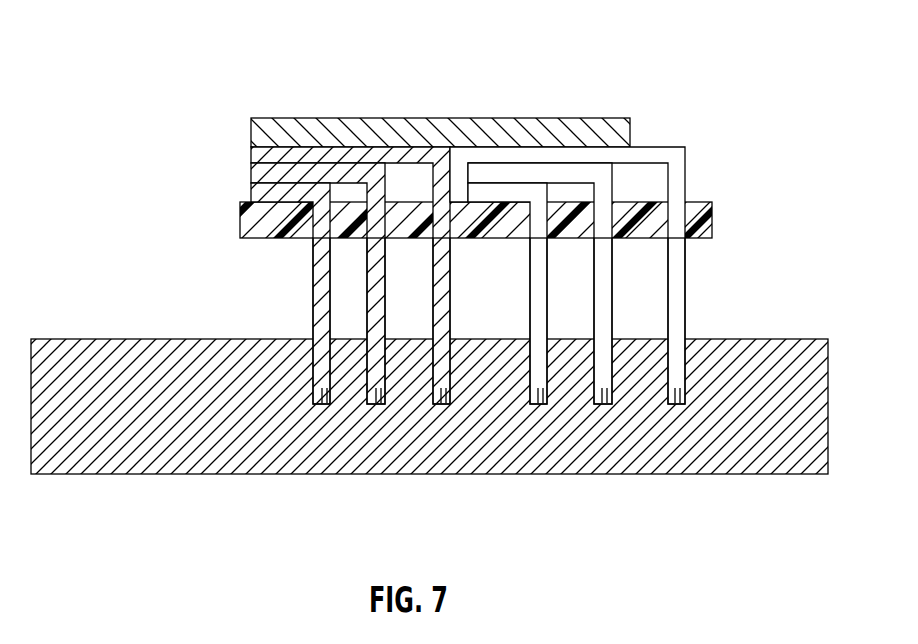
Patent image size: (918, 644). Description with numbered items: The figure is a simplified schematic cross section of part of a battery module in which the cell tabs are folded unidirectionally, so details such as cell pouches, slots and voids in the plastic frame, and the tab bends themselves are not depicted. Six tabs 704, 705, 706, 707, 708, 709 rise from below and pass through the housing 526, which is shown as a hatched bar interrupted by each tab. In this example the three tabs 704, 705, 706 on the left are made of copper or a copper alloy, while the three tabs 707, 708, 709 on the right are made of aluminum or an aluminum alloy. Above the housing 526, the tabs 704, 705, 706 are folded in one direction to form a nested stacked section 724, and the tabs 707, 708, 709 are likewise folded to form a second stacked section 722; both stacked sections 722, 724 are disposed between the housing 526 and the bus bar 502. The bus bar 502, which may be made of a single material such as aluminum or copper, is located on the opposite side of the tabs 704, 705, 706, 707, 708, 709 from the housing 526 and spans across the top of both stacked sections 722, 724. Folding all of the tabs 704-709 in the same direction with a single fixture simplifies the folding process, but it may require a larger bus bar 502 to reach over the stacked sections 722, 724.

The bus bar 502 is at (607, 122).
The housing 526 is at (698, 203).
The stacked section 722 is at (507, 178).
The stacked section 724 is at (308, 160).
The tab 704 is at (320, 403).
The tab 705 is at (373, 403).
The tab 706 is at (438, 403).
The tab 707 is at (537, 403).
The tab 708 is at (600, 403).
The tab 709 is at (672, 403).